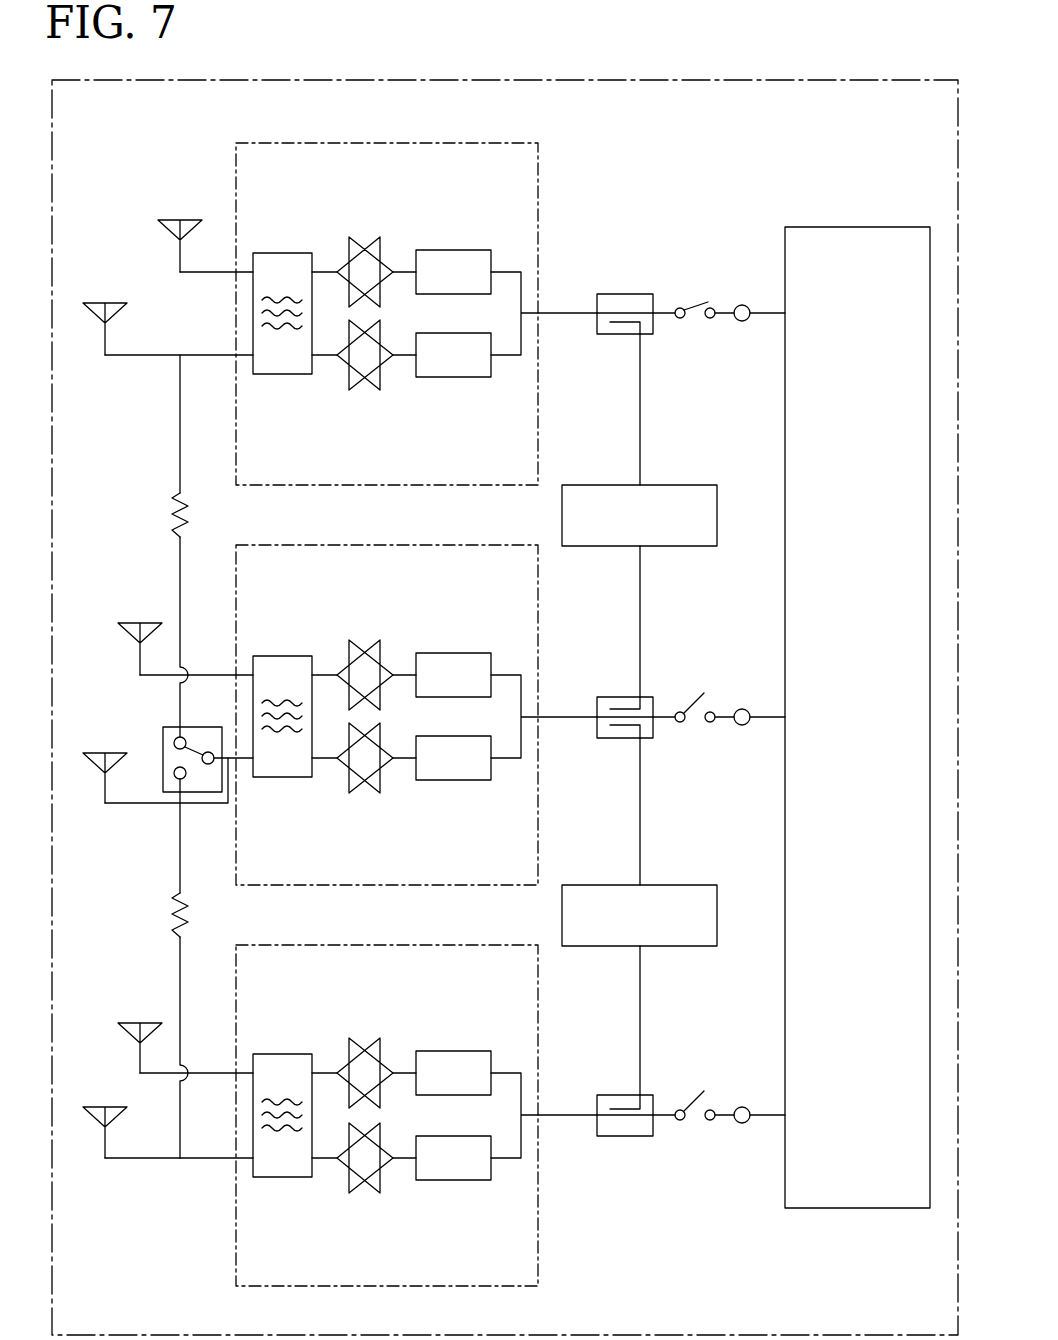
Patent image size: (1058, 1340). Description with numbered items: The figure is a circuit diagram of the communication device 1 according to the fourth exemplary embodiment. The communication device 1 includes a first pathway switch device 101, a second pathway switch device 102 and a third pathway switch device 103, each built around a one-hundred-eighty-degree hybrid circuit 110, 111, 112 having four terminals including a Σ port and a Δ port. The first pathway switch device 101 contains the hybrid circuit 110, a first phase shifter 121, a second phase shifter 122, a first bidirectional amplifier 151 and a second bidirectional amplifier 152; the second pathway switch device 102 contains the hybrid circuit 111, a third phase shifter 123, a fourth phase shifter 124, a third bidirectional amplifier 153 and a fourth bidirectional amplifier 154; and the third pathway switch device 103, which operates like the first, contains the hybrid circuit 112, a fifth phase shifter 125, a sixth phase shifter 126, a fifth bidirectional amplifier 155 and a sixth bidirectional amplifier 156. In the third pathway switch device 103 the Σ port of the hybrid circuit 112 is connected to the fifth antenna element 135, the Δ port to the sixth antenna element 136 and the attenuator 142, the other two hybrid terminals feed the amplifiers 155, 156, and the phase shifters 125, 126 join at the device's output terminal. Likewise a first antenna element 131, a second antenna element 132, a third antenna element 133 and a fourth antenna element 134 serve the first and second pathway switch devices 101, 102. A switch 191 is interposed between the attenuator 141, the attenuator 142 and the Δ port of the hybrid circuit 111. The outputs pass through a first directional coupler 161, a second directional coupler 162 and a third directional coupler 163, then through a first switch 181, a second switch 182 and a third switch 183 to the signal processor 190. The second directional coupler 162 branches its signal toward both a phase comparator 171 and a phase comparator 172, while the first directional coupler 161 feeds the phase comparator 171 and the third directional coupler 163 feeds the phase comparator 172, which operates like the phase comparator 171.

The communication device 1 is at (870, 80).
The first pathway switch device 101 is at (455, 143).
The second pathway switch device 102 is at (455, 545).
The third pathway switch device 103 is at (455, 945).
The 180-degree hybrid circuit 110 is at (283, 253).
The 180-degree hybrid circuit 111 is at (283, 656).
The 180-degree hybrid circuit 112 is at (283, 1054).
The first phase shifter 121 is at (455, 250).
The second phase shifter 122 is at (455, 377).
The third phase shifter 123 is at (455, 653).
The fourth phase shifter 124 is at (455, 780).
The fifth phase shifter 125 is at (455, 1051).
The sixth phase shifter 126 is at (455, 1180).
The first antenna element 131 is at (175, 220).
The second antenna element 132 is at (100, 303).
The third antenna element 133 is at (145, 623).
The fourth antenna element 134 is at (100, 753).
The fifth antenna element 135 is at (145, 1023).
The sixth antenna element 136 is at (100, 1107).
The attenuator 141 is at (190, 500).
The attenuator 142 is at (190, 900).
The first bidirectional amplifier 151 is at (358, 240).
The second bidirectional amplifier 152 is at (358, 390).
The third bidirectional amplifier 153 is at (358, 642).
The fourth bidirectional amplifier 154 is at (358, 793).
The fifth bidirectional amplifier 155 is at (358, 1040).
The sixth bidirectional amplifier 156 is at (358, 1193).
The first directional coupler 161 is at (625, 294).
The second directional coupler 162 is at (618, 738).
The third directional coupler 163 is at (618, 1136).
The phase comparator 171 is at (665, 485).
The phase comparator 172 is at (665, 885).
The first switch 181 is at (695, 305).
The second switch 182 is at (695, 723).
The third switch 183 is at (695, 1121).
The signal processor 190 is at (857, 227).
The switch 191 is at (175, 730).